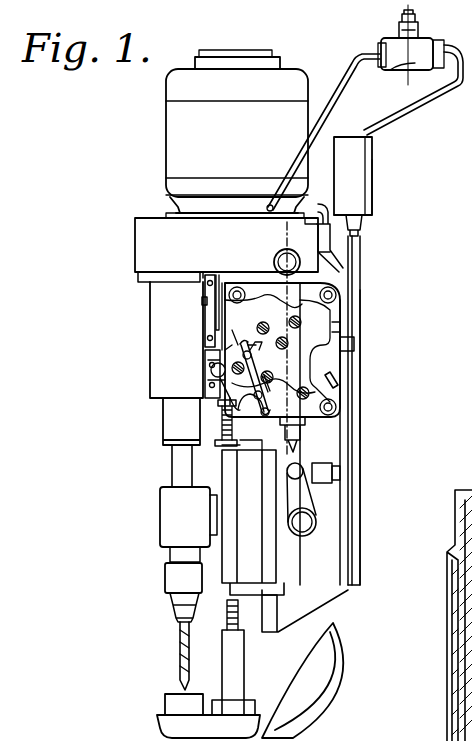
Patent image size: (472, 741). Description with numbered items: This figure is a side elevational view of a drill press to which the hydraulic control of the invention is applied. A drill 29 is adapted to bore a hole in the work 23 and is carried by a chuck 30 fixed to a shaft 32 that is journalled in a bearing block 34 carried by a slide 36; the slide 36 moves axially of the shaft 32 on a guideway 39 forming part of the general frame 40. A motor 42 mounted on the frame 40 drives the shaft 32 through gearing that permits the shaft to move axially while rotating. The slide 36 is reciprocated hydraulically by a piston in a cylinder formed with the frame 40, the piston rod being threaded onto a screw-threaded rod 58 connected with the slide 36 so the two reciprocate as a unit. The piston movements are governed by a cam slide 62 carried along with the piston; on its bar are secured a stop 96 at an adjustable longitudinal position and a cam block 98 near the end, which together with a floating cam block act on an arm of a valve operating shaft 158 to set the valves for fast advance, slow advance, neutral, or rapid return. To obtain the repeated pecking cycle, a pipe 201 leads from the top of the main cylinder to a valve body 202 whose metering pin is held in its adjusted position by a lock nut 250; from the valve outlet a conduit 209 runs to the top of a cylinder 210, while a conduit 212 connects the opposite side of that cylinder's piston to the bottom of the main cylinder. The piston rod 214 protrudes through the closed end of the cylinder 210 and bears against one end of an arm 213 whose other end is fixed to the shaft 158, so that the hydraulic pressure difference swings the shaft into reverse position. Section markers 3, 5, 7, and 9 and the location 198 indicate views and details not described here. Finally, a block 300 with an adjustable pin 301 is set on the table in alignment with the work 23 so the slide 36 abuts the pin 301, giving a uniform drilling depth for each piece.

The motor 42 is at (183, 137).
The pipe 201 is at (332, 90).
The valve body 202 is at (403, 62).
The lock nut 250 is at (418, 29).
The section line 9 is at (412, 5).
The conduit 209 is at (420, 99).
The section line 5 is at (353, 200).
The cylinder 210 is at (366, 152).
The piston rod 214 is at (361, 228).
The conduit 212 is at (358, 262).
The arm 213 is at (358, 302).
The shaft 158 is at (354, 351).
The guideway 39 is at (273, 633).
The section line 7 is at (332, 360).
The nozzle 198 is at (327, 385).
The section line 3 is at (300, 235).
The general frame 40 is at (165, 365).
The cam slide 62 is at (205, 287).
The stop 96 is at (203, 300).
The cam block 98 is at (205, 385).
The screw-threaded rod 58 is at (220, 437).
The shaft 32 is at (180, 468).
The bearing block 34 is at (167, 525).
The chuck 30 is at (172, 578).
The drill 29 is at (180, 651).
The work 23 is at (172, 703).
The slide 36 is at (222, 578).
The adjustable pin 301 is at (246, 612).
The block 300 is at (237, 685).